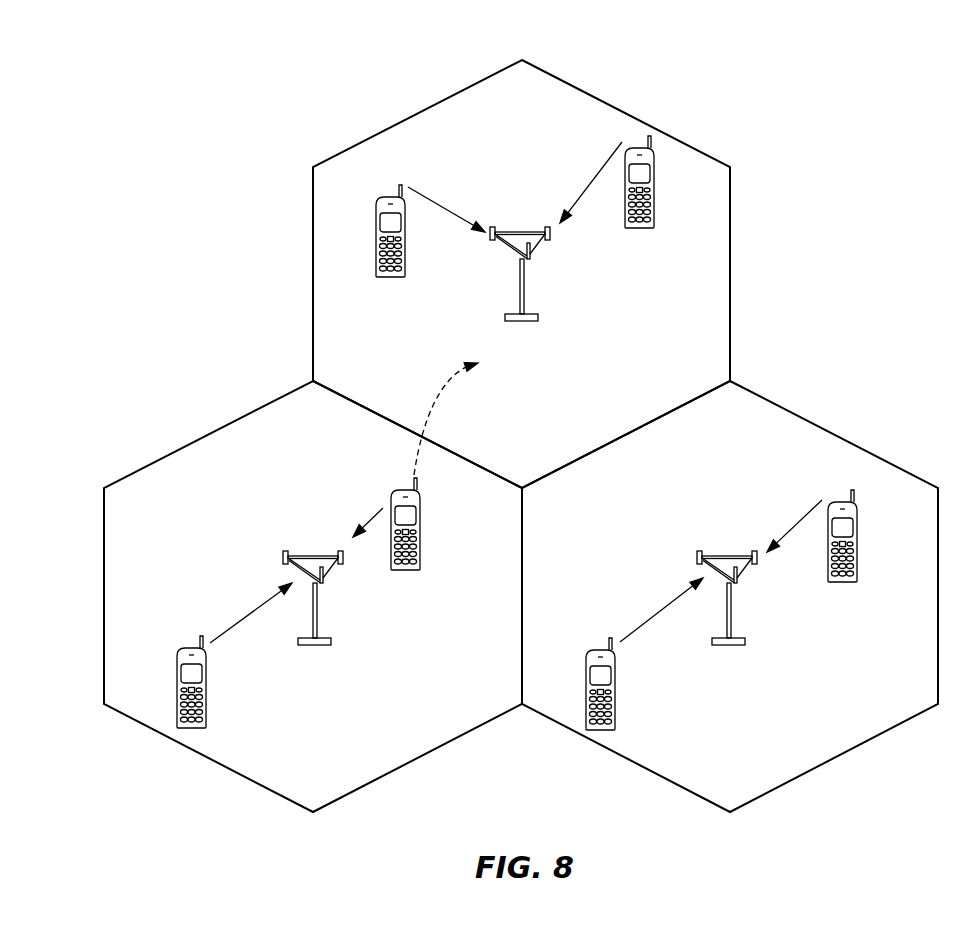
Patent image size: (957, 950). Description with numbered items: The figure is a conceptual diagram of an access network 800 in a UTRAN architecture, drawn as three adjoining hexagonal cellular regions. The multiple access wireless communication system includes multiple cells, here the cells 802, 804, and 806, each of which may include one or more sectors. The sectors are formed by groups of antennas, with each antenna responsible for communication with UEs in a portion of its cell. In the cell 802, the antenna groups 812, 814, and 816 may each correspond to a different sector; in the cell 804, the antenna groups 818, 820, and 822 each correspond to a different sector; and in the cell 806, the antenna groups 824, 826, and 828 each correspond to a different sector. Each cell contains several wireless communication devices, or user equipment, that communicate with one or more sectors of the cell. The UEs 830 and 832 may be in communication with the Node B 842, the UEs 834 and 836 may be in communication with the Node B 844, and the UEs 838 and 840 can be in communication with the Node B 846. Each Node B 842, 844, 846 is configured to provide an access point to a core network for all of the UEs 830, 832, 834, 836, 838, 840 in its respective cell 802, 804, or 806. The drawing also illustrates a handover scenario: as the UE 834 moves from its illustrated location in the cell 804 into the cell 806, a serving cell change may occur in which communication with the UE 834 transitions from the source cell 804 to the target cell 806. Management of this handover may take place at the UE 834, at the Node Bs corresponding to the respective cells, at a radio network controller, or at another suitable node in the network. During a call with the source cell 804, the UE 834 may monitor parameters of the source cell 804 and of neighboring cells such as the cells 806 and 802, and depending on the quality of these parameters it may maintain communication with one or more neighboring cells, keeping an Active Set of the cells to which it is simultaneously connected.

The access network 800 is at (845, 92).
The cell 802 is at (834, 433).
The cell 804 is at (183, 446).
The cell 806 is at (607, 103).
The antenna group 812 is at (700, 554).
The antenna group 814 is at (740, 584).
The antenna group 816 is at (760, 565).
The antenna group 818 is at (324, 584).
The antenna group 820 is at (343, 565).
The antenna group 822 is at (282, 554).
The antenna group 824 is at (488, 243).
The antenna group 826 is at (531, 260).
The antenna group 828 is at (552, 243).
The UE 830 is at (858, 525).
The UE 832 is at (587, 670).
The UE 834 is at (422, 511).
The UE 836 is at (178, 668).
The UE 838 is at (389, 277).
The UE 840 is at (643, 228).
The Node B 842 is at (731, 556).
The Node B 844 is at (314, 556).
The Node B 846 is at (523, 233).